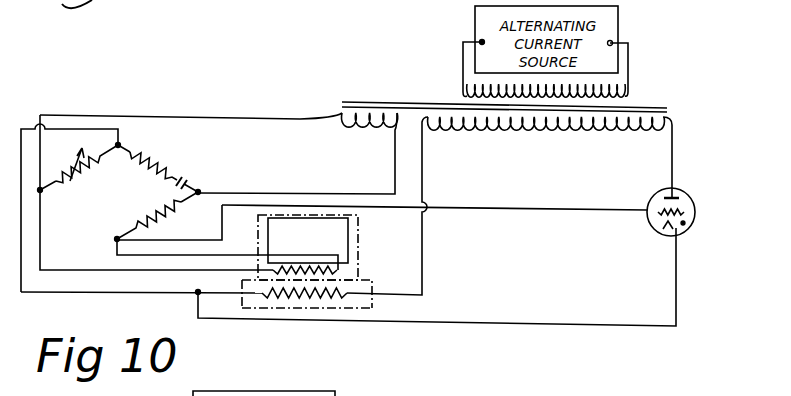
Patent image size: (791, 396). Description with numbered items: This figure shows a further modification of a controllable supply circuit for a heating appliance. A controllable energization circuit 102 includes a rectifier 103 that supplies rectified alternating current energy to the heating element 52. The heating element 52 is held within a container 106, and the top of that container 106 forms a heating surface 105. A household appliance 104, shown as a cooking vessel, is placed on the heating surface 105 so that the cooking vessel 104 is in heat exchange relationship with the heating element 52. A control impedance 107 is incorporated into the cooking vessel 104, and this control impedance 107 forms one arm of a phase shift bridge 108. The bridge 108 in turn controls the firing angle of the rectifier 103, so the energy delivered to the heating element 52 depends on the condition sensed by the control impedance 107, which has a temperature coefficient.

The heating element 52 is at (338, 292).
The controllable energization circuit 102 is at (630, 189).
The rectifier 103 is at (694, 201).
The household appliance 104 is at (360, 243).
The heating surface 105 is at (360, 283).
The container 106 is at (372, 305).
The control impedance 107 is at (300, 268).
The phase shift bridge 108 is at (104, 224).